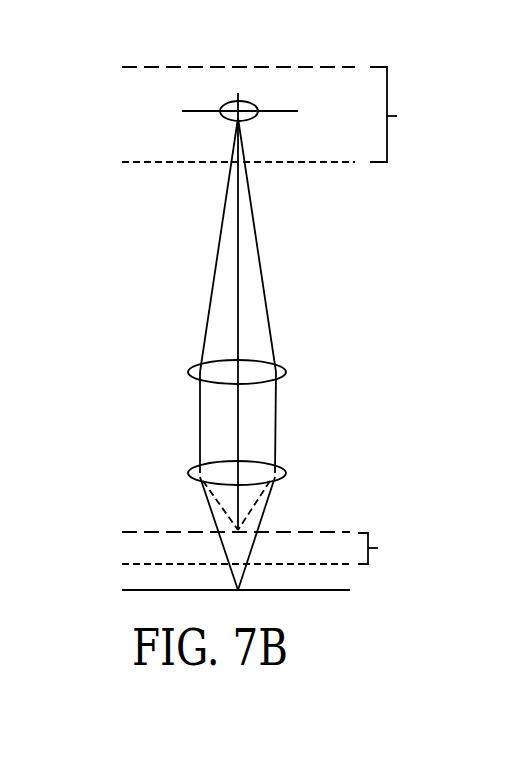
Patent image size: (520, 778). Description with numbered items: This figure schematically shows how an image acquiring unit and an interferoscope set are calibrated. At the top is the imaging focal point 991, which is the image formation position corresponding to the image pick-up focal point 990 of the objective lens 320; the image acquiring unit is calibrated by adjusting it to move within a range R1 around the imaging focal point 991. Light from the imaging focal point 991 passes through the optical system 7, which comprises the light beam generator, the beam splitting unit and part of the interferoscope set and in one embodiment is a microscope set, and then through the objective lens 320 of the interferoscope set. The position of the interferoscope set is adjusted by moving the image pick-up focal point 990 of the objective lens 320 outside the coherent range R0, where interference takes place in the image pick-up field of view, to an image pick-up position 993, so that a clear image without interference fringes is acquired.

The imaging focal point 991 is at (242, 117).
The range R1 is at (279, 114).
The optical system 7 is at (281, 366).
The objective lens 320 is at (280, 467).
The image pick-up focal point 990 is at (247, 529).
The coherent range R0 is at (266, 546).
The image pick-up position 993 is at (350, 590).